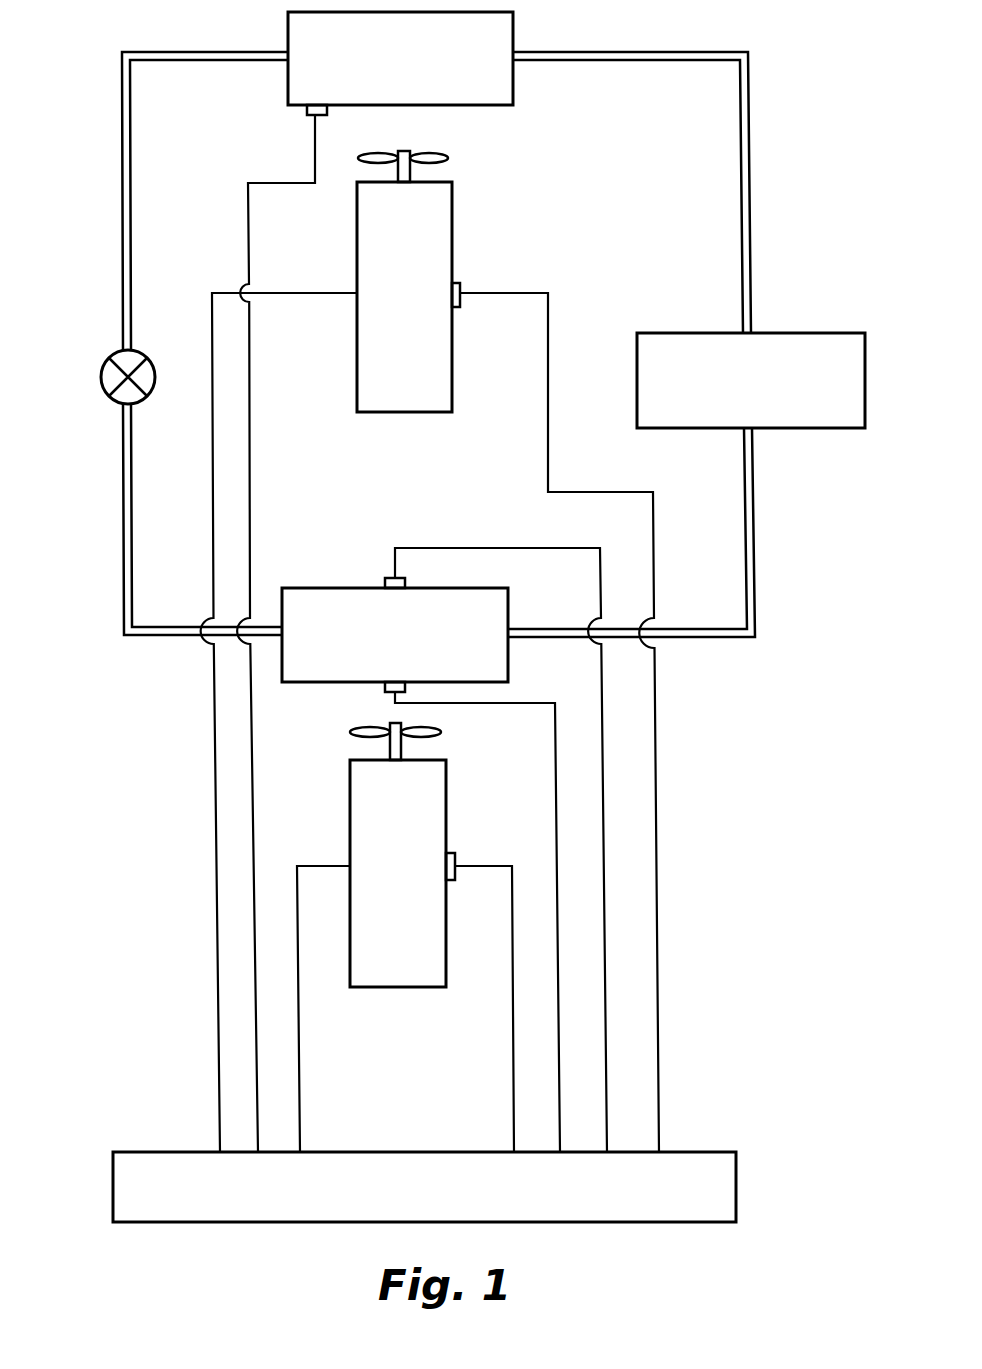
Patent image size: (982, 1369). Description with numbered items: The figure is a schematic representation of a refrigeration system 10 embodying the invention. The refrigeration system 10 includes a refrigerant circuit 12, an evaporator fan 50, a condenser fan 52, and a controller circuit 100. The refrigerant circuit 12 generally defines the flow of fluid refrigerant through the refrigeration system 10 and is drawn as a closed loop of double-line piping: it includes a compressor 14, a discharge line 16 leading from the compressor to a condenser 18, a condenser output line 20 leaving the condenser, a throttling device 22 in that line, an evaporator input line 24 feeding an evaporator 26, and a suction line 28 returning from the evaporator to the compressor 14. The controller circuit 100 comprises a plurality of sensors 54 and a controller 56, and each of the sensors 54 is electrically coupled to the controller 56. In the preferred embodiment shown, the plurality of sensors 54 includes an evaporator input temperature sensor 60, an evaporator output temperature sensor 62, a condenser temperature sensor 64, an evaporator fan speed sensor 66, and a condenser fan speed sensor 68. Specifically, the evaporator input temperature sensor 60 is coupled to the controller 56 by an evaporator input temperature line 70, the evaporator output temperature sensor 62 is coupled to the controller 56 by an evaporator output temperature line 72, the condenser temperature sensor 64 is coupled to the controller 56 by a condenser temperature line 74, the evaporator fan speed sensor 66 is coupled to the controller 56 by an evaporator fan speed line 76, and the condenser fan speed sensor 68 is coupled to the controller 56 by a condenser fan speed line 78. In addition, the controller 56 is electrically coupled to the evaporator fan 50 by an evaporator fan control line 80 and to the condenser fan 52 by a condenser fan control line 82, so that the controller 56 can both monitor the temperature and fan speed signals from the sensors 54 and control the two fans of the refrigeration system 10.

The refrigeration system 10 is at (781, 40).
The refrigerant circuit 12 is at (775, 269).
The compressor 14 is at (800, 403).
The discharge line 16 is at (742, 184).
The condenser 18 is at (480, 27).
The condenser output line 20 is at (133, 210).
The throttling device 22 is at (146, 359).
The evaporator input line 24 is at (133, 571).
The evaporator 26 is at (340, 592).
The suction line 28 is at (752, 536).
The evaporator fan 50 is at (421, 955).
The condenser fan 52 is at (418, 385).
The plurality of sensors 54 is at (337, 108).
The controller 56 is at (622, 1200).
The evaporator input temperature sensor 60 is at (385, 688).
The evaporator output temperature sensor 62 is at (405, 585).
The condenser temperature sensor 64 is at (306, 112).
The evaporator fan speed sensor 66 is at (455, 856).
The condenser fan speed sensor 68 is at (460, 307).
The evaporator input temperature line 70 is at (540, 712).
The evaporator output temperature line 72 is at (503, 520).
The condenser temperature line 74 is at (250, 228).
The evaporator fan speed line 76 is at (514, 1072).
The condenser fan speed line 78 is at (660, 940).
The evaporator fan control line 80 is at (300, 1055).
The condenser fan control line 82 is at (220, 1040).
The controller circuit 100 is at (705, 1096).